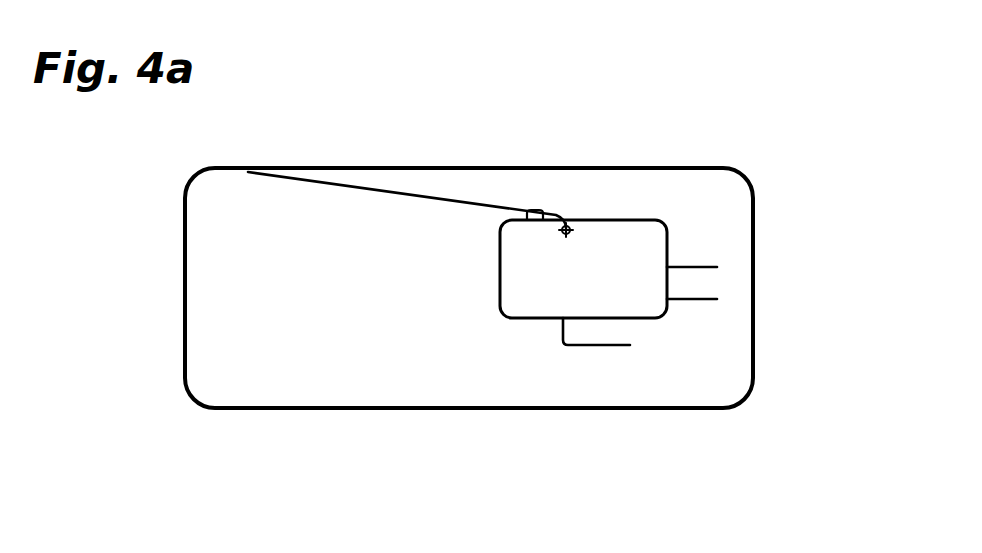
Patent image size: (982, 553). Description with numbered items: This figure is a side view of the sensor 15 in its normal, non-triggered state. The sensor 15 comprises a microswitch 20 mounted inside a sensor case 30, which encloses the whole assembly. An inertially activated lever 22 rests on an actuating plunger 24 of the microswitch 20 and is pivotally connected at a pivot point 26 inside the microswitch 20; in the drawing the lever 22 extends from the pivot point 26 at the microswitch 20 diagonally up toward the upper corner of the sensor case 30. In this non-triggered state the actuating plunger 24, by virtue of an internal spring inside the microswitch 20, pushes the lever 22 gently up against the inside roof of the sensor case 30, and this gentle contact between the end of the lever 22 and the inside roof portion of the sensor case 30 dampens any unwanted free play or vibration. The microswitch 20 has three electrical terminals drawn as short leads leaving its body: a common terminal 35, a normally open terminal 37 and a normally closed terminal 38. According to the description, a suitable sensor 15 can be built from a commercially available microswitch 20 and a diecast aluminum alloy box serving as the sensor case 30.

The sensor 15 is at (538, 242).
The microswitch 20 is at (577, 287).
The lever 22 is at (310, 181).
The actuating plunger 24 is at (522, 216).
The pivot point 26 is at (572, 232).
The sensor case 30 is at (753, 363).
The common terminal 35 is at (610, 346).
The normally open terminal 37 is at (688, 300).
The normally closed terminal 38 is at (693, 266).